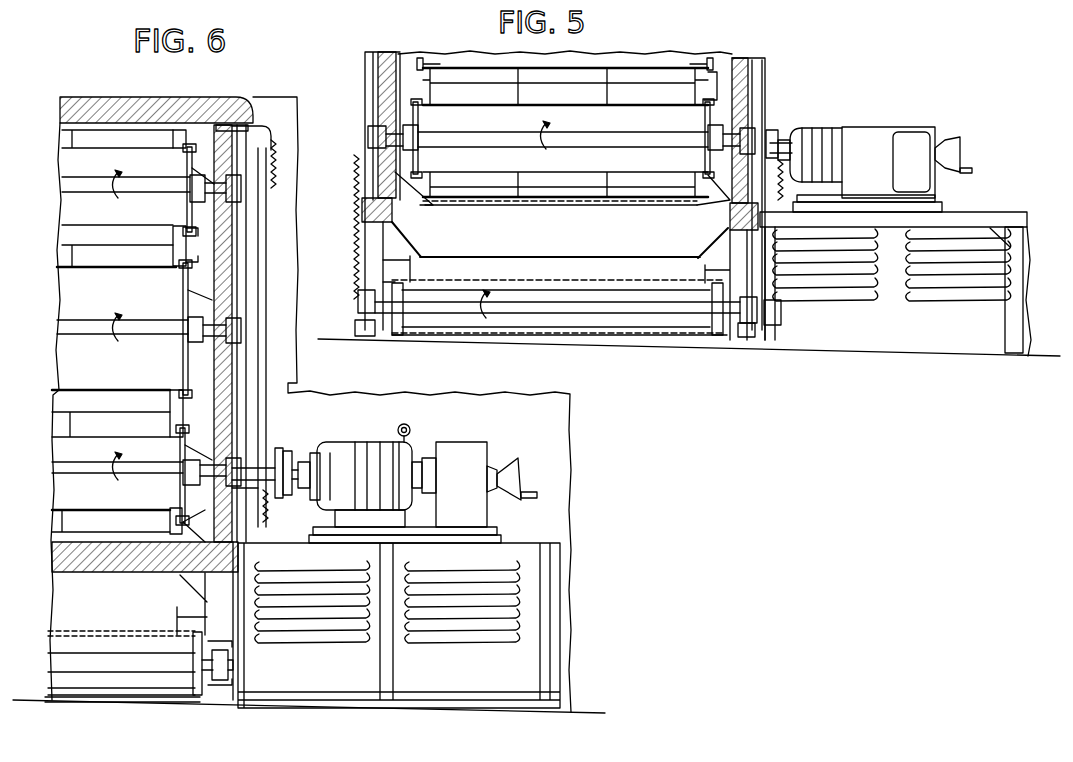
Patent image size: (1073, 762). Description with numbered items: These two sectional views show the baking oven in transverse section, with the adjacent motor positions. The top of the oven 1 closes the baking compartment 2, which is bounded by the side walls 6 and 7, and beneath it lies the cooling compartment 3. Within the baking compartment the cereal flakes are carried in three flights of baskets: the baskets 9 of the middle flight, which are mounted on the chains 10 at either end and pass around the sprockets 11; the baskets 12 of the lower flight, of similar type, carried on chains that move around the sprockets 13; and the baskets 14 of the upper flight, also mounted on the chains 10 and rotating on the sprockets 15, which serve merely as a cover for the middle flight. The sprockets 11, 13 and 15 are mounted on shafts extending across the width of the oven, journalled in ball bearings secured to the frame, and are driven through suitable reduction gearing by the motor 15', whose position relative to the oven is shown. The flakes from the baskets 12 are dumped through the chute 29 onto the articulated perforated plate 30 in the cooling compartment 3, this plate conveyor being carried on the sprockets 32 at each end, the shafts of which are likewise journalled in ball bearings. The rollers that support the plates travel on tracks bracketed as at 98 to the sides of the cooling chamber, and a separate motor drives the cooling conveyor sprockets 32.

In FIG. 6, the top of the oven 1 is at (106, 97).
In FIG. 6, the baking compartment 2 is at (70, 155).
In FIG. 5, the baking compartment 2 is at (413, 66).
In FIG. 6, the cooling compartment 3 is at (72, 588).
In FIG. 5, the cooling compartment 3 is at (485, 272).
In FIG. 5, the side wall 6 is at (378, 72).
In FIG. 6, the side wall 7 is at (236, 253).
In FIG. 5, the side wall 7 is at (752, 78).
In FIG. 6, the baskets 9 is at (119, 263).
In FIG. 5, the baskets 9 is at (635, 75).
In FIG. 6, the chains 10 is at (199, 235).
In FIG. 5, the chains 10 is at (713, 106).
In FIG. 6, the sprockets 11 is at (182, 365).
In FIG. 5, the sprockets 11 is at (428, 62).
In FIG. 6, the baskets 12 is at (115, 428).
In FIG. 5, the baskets 12 is at (578, 100).
In FIG. 6, the sprockets 13 is at (178, 497).
In FIG. 5, the sprockets 13 is at (418, 155).
In FIG. 6, the baskets 14 is at (150, 140).
In FIG. 6, the sprockets 15 is at (184, 190).
In FIG. 6, the motor 15' is at (384, 472).
In FIG. 5, the chute 29 is at (540, 258).
In FIG. 6, the articulated perforated plate 30 is at (131, 635).
In FIG. 5, the articulated perforated plate 30 is at (598, 270).
In FIG. 6, the sprockets 32 is at (190, 645).
In FIG. 5, the sprockets 32 is at (404, 293).
In FIG. 6, the brackets 98 is at (211, 698).
In FIG. 5, the brackets 98 is at (376, 338).